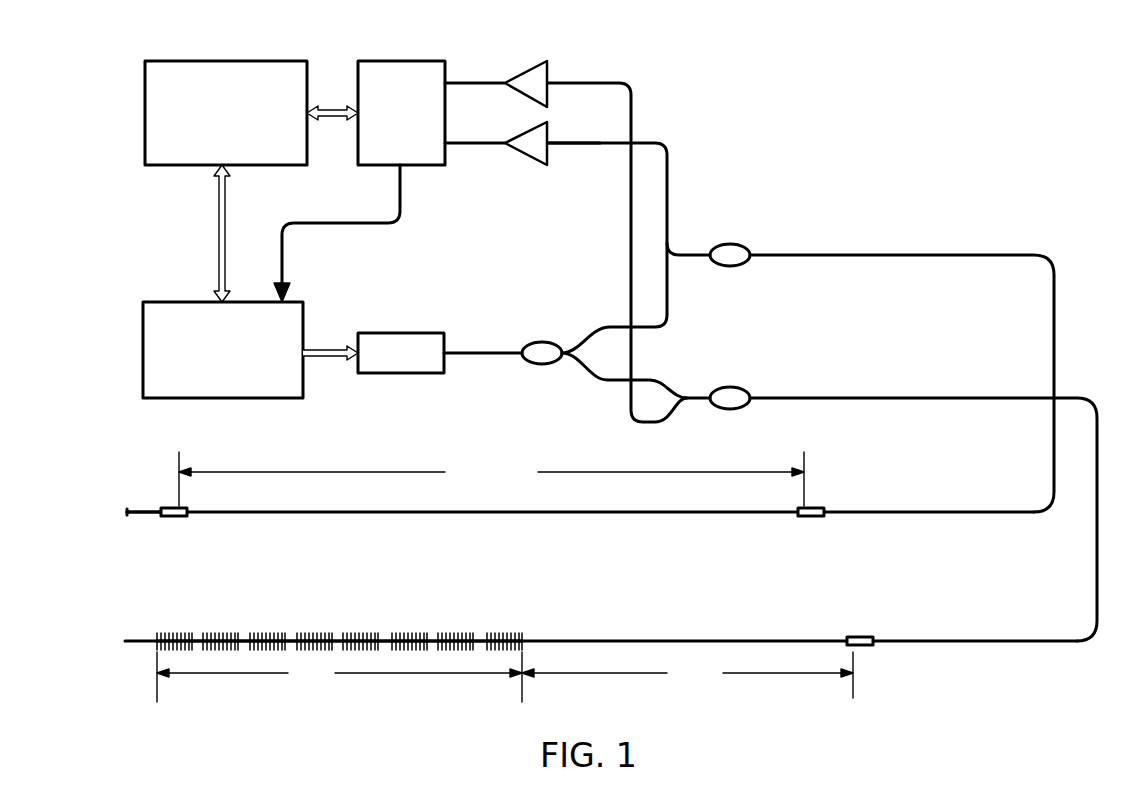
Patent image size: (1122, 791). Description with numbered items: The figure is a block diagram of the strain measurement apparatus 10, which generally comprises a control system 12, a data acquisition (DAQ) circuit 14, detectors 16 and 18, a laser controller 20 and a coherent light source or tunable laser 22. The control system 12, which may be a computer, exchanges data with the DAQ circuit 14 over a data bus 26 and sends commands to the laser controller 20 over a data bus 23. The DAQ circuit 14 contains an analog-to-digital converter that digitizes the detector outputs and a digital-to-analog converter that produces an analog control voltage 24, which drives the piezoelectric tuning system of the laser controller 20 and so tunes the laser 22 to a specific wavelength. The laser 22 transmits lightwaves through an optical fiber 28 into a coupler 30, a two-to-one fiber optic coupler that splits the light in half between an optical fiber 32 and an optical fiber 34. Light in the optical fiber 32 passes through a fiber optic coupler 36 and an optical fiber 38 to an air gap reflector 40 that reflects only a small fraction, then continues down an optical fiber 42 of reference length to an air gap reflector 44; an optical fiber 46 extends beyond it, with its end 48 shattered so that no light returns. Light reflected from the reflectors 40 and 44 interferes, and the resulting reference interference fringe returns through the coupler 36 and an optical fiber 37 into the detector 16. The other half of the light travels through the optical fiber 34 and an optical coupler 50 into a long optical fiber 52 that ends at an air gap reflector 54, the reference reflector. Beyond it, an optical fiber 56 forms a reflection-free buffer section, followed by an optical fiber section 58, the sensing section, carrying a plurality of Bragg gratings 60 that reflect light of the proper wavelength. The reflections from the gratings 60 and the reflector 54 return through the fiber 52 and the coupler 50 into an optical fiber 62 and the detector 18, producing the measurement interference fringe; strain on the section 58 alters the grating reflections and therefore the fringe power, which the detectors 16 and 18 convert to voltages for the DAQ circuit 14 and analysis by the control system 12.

The apparatus 10 is at (643, 65).
The control system 12 is at (210, 61).
The data acquisition (DAQ) circuit 14 is at (402, 61).
The detector 16 is at (530, 157).
The detector 18 is at (528, 63).
The laser controller 20 is at (220, 398).
The tunable laser 22 is at (387, 333).
The data bus 23 is at (218, 230).
The analog control voltage 24 is at (337, 228).
The data bus 26 is at (325, 103).
The optical fiber 28 is at (475, 353).
The coupler 30 is at (550, 343).
The optical fiber 32 is at (670, 293).
The optical fiber 34 is at (650, 375).
The fiber optic coupler 36 is at (740, 243).
The optical fiber 37 is at (592, 145).
The optical fiber 38 is at (1052, 325).
The air gap reflector 40 is at (820, 517).
The optical fiber 42 is at (340, 512).
The air gap reflector 44 is at (183, 517).
The optical fiber 46 is at (145, 512).
The end 48 is at (127, 512).
The optical coupler 50 is at (742, 388).
The optical fiber 52 is at (1093, 600).
The air gap reflector 54 is at (870, 647).
The optical fiber 56 is at (692, 641).
The optical fiber section 58 is at (340, 636).
The Bragg gratings 60 is at (538, 592).
The optical fiber 62 is at (633, 117).